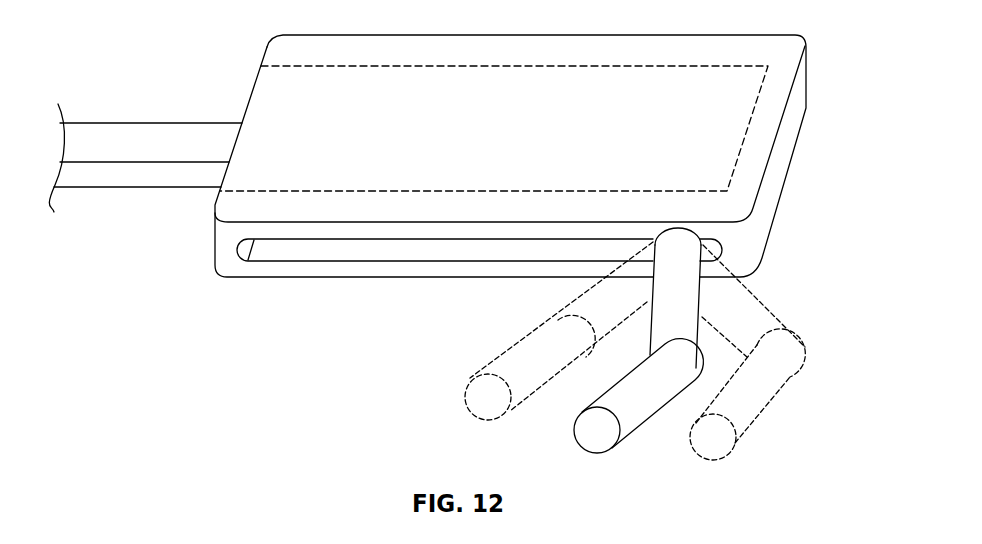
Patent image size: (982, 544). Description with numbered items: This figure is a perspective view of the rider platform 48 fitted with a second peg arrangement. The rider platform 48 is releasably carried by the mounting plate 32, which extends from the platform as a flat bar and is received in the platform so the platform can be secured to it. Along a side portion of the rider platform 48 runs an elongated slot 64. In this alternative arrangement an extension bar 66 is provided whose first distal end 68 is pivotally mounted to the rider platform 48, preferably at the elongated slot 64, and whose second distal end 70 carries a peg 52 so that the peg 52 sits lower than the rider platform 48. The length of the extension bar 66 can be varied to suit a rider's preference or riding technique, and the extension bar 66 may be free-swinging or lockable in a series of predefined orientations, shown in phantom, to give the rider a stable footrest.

The rider platform 48 is at (792, 57).
The mounting plate 32 is at (163, 135).
The elongated slot 64 is at (288, 250).
The extension bar 66 is at (678, 316).
The first distal end 68 is at (675, 240).
The peg 52 is at (627, 423).
The second distal end 70 is at (697, 348).